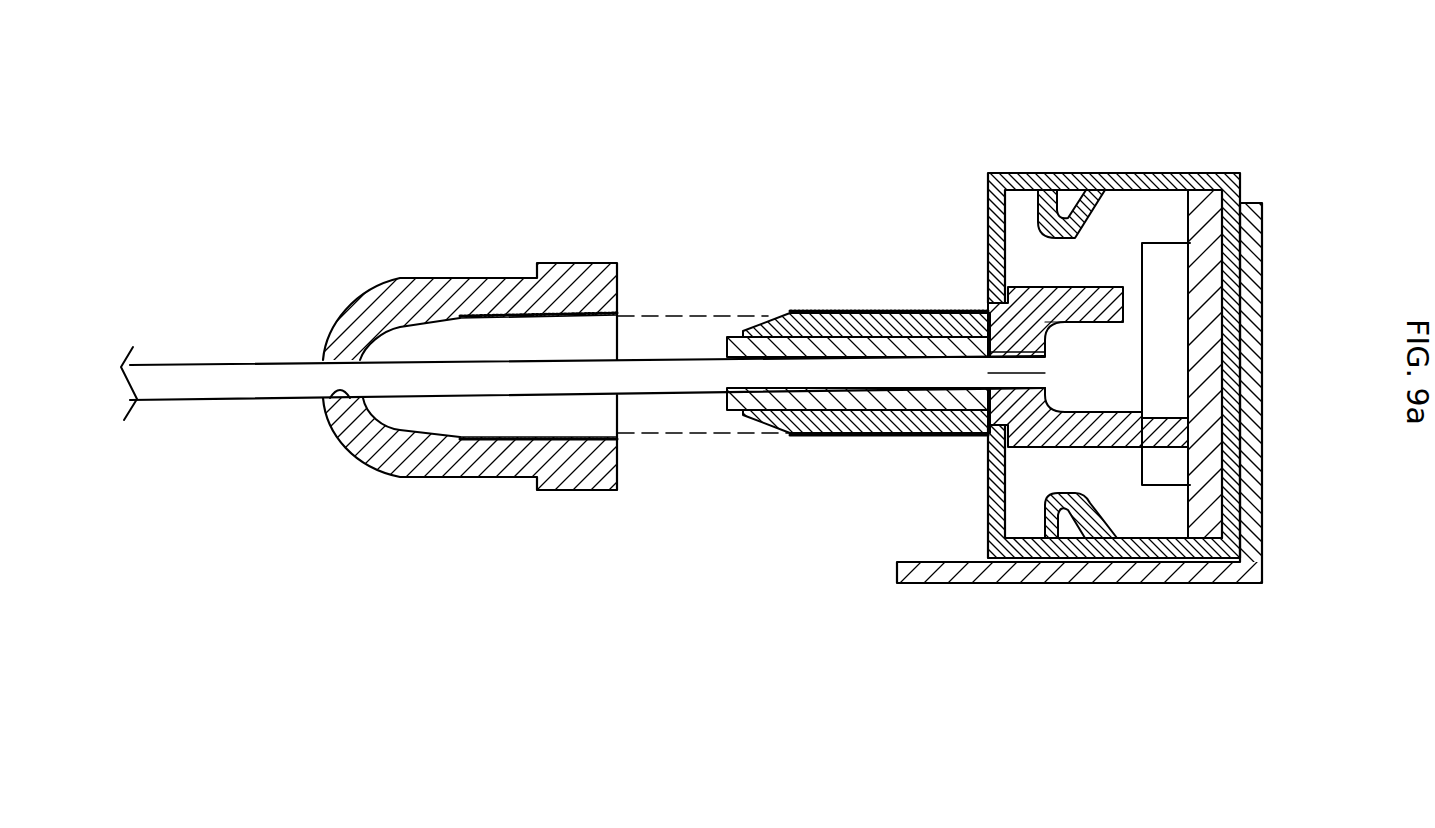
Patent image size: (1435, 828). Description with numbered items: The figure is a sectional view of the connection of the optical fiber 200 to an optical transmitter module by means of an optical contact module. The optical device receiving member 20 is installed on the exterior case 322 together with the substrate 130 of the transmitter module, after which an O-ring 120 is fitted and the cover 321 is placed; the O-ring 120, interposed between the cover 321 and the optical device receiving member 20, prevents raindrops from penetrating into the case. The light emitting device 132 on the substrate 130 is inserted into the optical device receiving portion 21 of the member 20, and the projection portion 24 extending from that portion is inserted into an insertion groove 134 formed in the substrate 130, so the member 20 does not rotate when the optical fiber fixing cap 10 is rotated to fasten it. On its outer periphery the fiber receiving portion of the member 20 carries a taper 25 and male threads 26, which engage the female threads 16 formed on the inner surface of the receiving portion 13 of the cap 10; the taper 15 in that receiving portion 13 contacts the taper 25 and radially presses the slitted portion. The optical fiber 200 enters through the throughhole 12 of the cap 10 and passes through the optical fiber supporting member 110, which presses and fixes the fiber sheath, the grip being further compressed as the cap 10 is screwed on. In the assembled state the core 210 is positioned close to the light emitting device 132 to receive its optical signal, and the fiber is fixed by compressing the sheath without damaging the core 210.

The optical fiber 200 is at (208, 362).
The optical fiber fixing cap 10 is at (353, 275).
The throughhole 12 is at (325, 400).
The receiving portion 13 is at (598, 428).
The taper 15 is at (457, 326).
The female threads 16 is at (622, 318).
The taper 25 is at (780, 312).
The male threads 26 is at (887, 425).
The optical fiber supporting member 110 is at (858, 337).
The optical device receiving member 20 is at (942, 305).
The core 210 is at (1007, 374).
The O-ring 120 is at (1010, 290).
The optical device receiving portion 21 is at (1077, 318).
The light emitting device 132 is at (1065, 352).
The substrate 130 is at (1165, 258).
The projection portion 24 is at (1162, 435).
The insertion groove 134 is at (1165, 476).
The cover 321 is at (1010, 562).
The exterior case 322 is at (1180, 548).